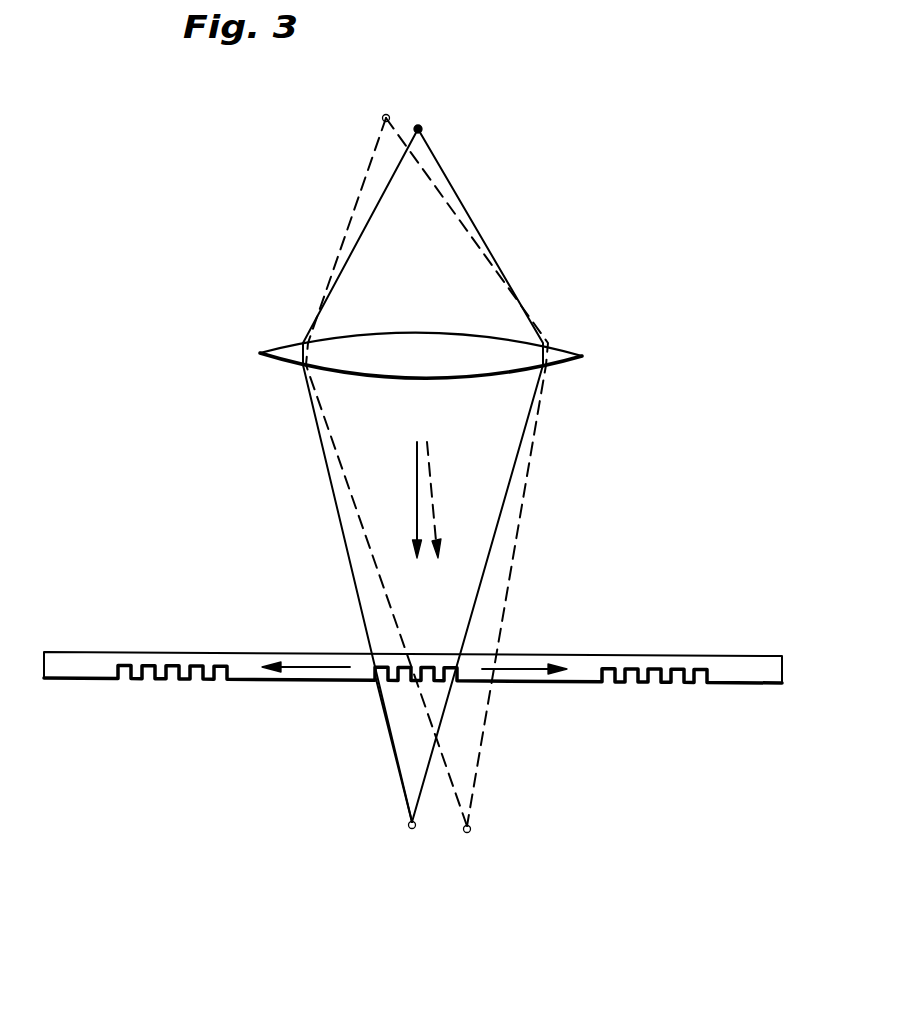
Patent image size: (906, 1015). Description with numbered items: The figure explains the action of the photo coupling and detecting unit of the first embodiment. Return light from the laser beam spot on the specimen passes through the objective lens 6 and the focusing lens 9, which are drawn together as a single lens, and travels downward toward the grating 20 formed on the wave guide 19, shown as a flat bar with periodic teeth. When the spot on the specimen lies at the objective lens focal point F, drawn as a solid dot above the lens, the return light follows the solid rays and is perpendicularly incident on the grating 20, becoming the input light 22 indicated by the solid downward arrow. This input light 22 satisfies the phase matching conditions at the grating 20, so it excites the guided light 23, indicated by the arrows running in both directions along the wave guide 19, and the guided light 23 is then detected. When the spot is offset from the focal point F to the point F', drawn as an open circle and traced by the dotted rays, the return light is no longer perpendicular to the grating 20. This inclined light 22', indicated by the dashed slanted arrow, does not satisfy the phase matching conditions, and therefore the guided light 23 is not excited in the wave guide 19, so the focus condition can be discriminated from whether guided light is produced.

The objective lens focal point F is at (423, 448).
The offset focal point F' is at (424, 474).
The objective lens 6 is at (477, 356).
The focusing lens 9 is at (582, 356).
The input light 22 is at (327, 500).
The inclined light 22' is at (522, 500).
The guided light 23 is at (305, 683).
The grating 20 is at (398, 686).
The wave guide 19 is at (757, 671).